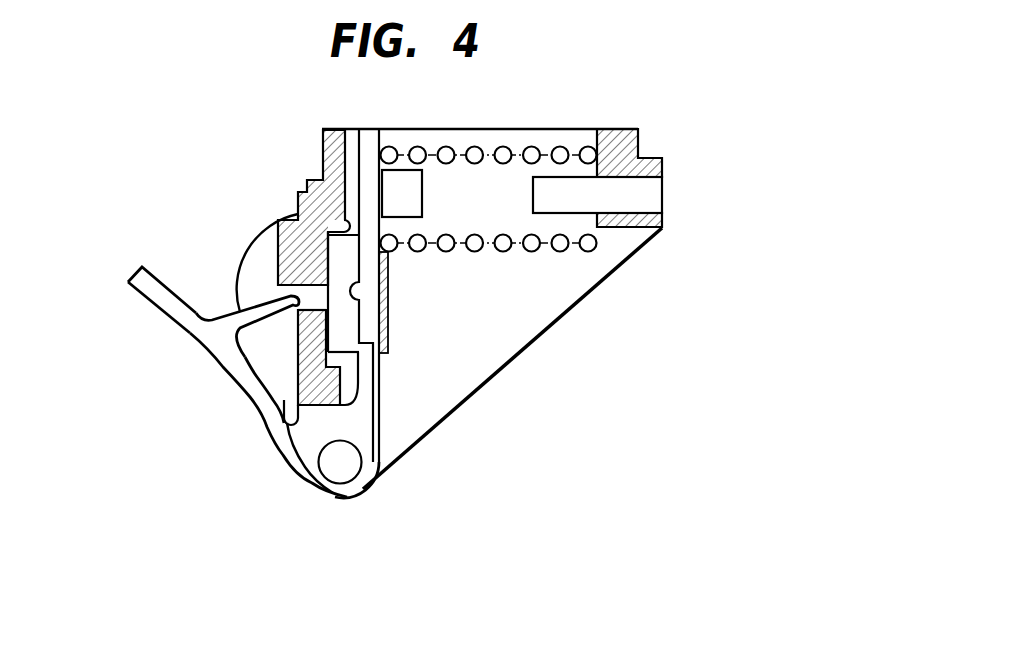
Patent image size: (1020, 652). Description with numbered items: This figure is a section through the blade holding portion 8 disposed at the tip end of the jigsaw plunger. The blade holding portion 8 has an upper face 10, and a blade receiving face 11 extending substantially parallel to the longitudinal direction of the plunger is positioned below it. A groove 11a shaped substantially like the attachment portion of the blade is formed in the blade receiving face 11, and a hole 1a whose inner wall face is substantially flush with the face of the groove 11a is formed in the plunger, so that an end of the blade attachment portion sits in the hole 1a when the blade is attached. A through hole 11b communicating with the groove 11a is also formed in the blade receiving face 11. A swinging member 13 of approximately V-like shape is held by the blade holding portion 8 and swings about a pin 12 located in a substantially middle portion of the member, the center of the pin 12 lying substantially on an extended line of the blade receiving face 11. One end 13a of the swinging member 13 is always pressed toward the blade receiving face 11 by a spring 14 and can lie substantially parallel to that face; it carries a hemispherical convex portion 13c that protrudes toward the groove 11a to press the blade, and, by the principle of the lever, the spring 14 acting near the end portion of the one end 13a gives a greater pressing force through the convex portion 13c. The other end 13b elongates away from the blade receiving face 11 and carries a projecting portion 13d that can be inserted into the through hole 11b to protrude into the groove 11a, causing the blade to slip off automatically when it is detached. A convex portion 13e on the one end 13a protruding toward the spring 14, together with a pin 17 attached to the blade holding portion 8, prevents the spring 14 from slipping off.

The hole 1a is at (340, 258).
The blade holding portion 8 is at (626, 245).
The upper face 10 is at (485, 332).
The blade receiving face 11 is at (297, 398).
The groove 11a is at (337, 205).
The through hole 11b is at (297, 292).
The pin 12 is at (348, 469).
The swinging member 13 is at (290, 437).
The one end 13a is at (373, 173).
The other end 13b is at (162, 306).
The convex portion 13c is at (388, 337).
The projecting portion 13d is at (296, 314).
The convex portion 13e is at (402, 185).
The spring 14 is at (533, 249).
The pin 17 is at (618, 185).